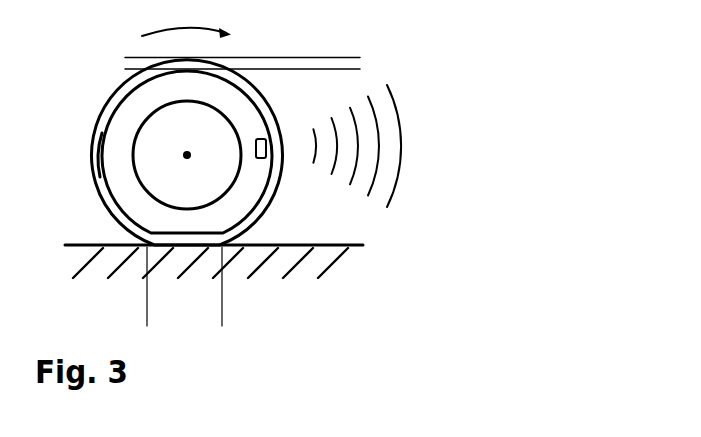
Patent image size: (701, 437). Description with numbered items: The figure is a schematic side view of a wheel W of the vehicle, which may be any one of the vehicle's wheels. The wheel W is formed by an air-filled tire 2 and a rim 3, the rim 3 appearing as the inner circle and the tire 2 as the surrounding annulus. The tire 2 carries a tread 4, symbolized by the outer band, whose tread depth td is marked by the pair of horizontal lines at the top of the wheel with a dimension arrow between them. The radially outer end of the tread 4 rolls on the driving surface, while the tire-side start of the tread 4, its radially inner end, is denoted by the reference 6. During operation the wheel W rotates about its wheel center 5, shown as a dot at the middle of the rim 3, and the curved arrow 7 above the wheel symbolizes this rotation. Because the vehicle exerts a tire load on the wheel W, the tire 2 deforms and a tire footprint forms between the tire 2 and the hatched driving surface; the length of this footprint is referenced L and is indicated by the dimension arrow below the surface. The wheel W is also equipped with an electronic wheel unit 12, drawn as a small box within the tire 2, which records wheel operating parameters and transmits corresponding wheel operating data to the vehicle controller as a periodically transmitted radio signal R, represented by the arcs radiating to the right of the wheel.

The tire 2 is at (117, 170).
The rim 3 is at (215, 172).
The tread 4 is at (98, 180).
The wheel center 5 is at (184, 156).
The radially inner end of the tread 6 is at (110, 198).
The arrow 7 is at (186, 21).
The electronic wheel unit 12 is at (268, 145).
The wheel W is at (84, 89).
The radio signal R is at (413, 71).
The tread depth td is at (358, 40).
The tire footprint length L is at (219, 315).